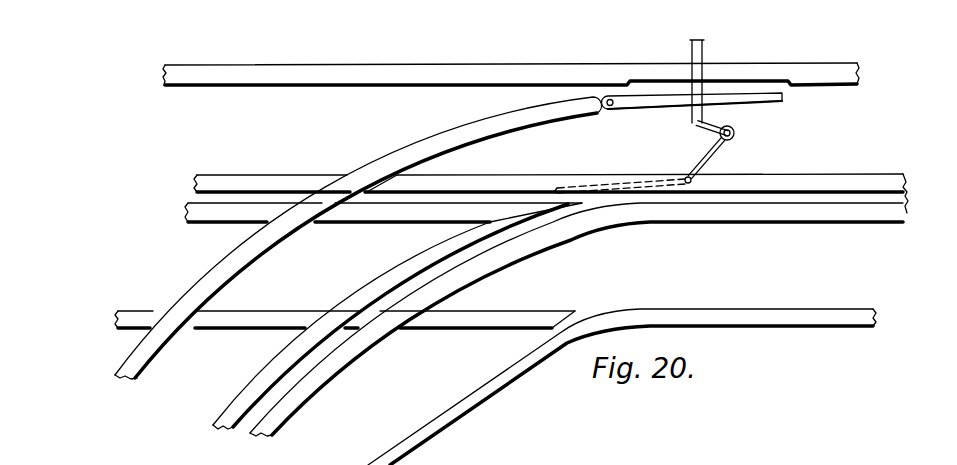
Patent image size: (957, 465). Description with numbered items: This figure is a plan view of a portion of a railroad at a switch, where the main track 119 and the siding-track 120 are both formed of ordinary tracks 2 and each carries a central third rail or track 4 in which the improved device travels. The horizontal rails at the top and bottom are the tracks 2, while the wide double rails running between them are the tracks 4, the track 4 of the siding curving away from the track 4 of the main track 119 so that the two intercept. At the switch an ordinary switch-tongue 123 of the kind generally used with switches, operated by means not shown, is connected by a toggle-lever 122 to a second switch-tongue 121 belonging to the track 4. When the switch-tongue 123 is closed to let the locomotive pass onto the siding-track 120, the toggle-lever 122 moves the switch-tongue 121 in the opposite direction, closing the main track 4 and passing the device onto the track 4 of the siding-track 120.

The tracks 2 is at (440, 72).
The third rail or track 4 is at (542, 317).
The main track 119 is at (358, 238).
The siding-track 120 is at (345, 364).
The switch-tongue 121 is at (648, 177).
The toggle-lever 122 is at (735, 133).
The ordinary switch-tongue 123 is at (631, 99).